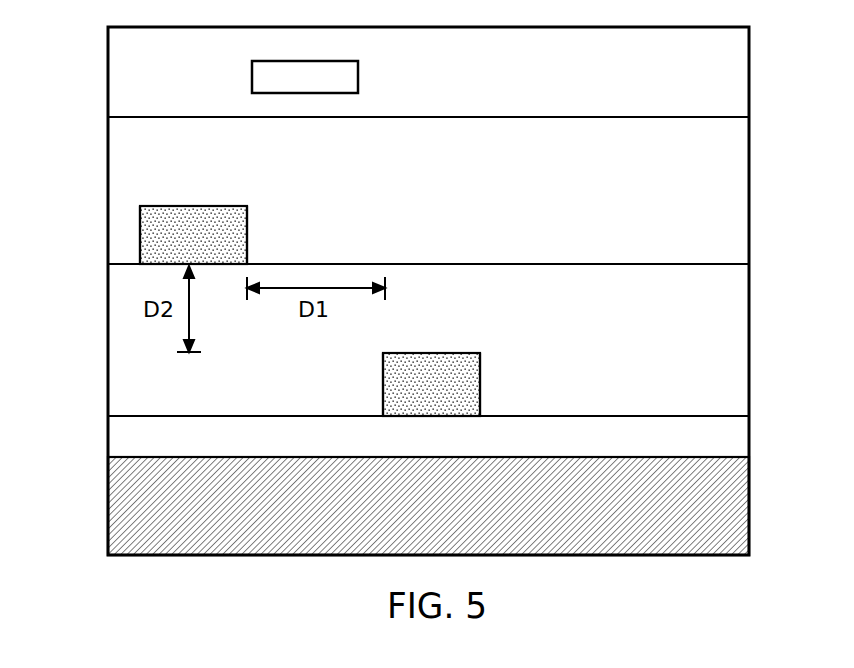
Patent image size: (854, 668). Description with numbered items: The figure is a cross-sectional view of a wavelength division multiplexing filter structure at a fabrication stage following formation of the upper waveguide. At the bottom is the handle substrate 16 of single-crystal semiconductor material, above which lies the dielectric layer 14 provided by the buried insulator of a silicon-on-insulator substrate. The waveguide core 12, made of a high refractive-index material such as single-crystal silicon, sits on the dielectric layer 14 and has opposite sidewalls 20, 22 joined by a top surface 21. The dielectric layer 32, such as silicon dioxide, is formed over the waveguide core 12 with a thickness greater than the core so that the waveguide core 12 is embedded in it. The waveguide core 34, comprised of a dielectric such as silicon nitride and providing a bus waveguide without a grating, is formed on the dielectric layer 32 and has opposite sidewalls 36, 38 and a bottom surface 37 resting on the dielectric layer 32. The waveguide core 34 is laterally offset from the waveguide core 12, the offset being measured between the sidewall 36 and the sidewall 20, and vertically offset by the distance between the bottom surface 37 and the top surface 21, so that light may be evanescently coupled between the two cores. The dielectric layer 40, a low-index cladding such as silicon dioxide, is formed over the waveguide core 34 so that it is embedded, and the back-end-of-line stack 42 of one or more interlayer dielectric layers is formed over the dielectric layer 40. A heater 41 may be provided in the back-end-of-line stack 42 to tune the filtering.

The waveguide core 12 is at (445, 378).
The dielectric layer 14 is at (710, 437).
The handle substrate 16 is at (143, 508).
The sidewall 20 is at (383, 372).
The top surface 21 is at (410, 353).
The sidewall 22 is at (480, 397).
The dielectric layer 32 is at (700, 325).
The waveguide core 34 is at (208, 221).
The sidewall 36 is at (247, 241).
The bottom surface 37 is at (168, 265).
The sidewall 38 is at (140, 232).
The dielectric layer 40 is at (700, 178).
The heater 41 is at (338, 77).
The back-end-of-line stack 42 is at (700, 82).